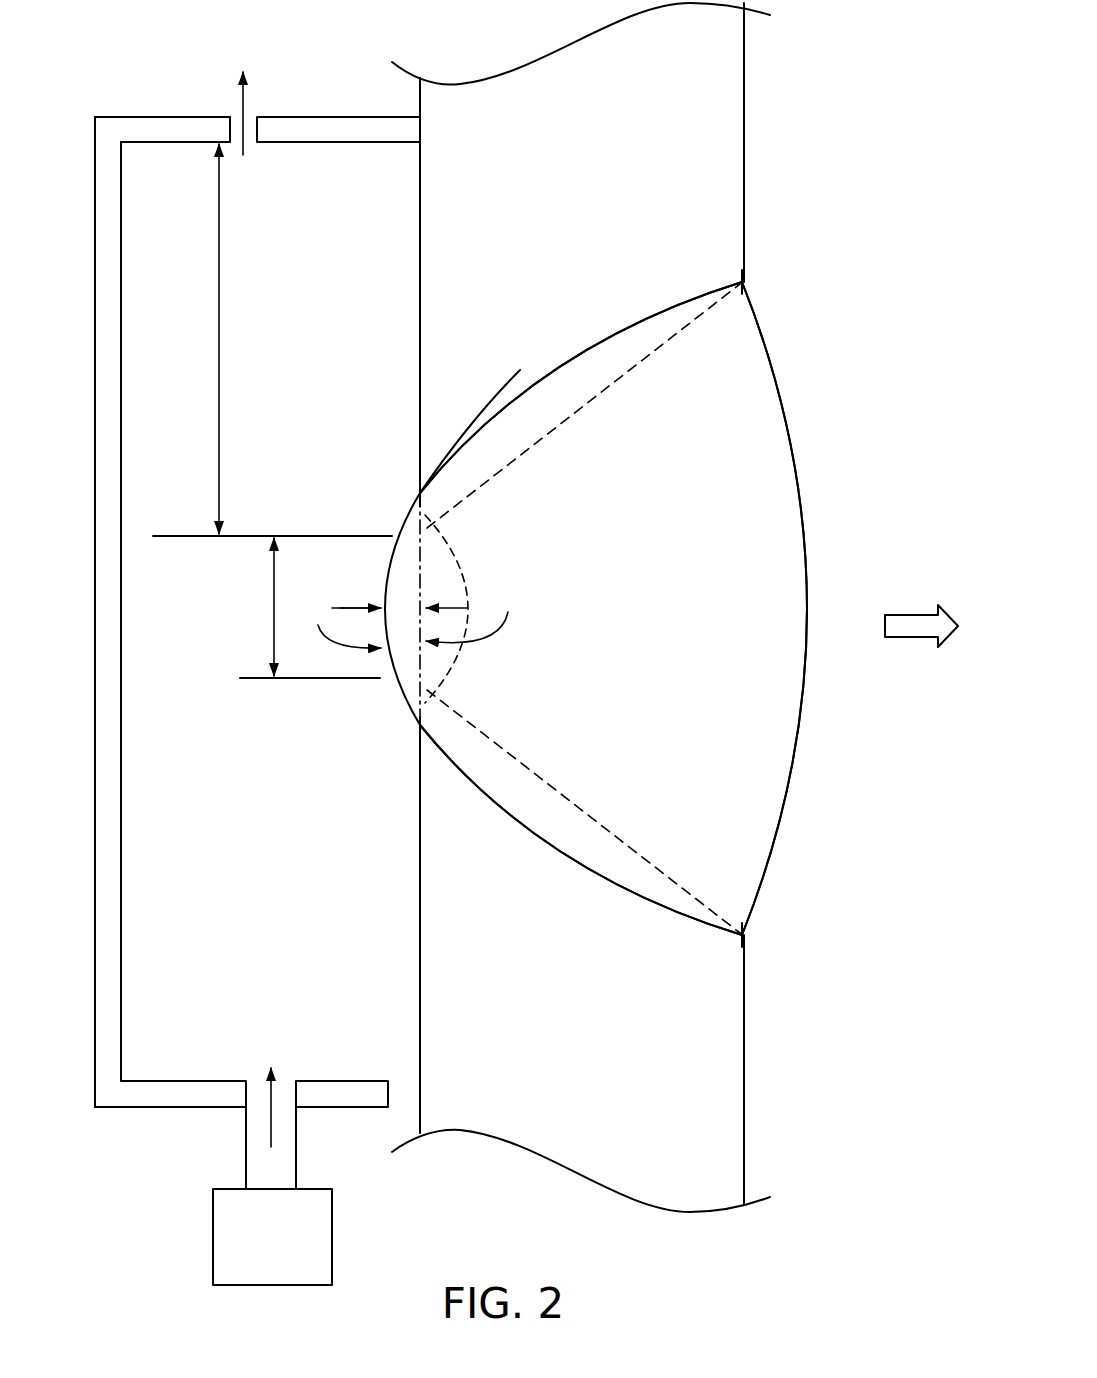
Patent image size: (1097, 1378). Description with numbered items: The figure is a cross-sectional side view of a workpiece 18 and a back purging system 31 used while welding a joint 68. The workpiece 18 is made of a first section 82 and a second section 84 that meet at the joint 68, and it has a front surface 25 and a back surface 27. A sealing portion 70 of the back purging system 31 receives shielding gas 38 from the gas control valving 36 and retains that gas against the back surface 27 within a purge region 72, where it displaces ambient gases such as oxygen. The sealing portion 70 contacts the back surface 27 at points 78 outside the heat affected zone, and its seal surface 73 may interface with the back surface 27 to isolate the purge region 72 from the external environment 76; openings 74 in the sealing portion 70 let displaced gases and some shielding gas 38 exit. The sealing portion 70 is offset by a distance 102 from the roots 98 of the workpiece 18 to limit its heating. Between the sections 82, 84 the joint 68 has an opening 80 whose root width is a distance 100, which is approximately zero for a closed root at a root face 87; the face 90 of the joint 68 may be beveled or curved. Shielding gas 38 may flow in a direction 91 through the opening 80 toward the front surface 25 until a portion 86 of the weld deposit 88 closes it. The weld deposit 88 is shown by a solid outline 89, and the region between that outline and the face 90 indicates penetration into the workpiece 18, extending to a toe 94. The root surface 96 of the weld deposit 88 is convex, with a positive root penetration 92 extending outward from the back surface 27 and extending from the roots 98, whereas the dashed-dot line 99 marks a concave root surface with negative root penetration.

The workpiece 18 is at (735, 43).
The front surface 25 is at (748, 112).
The back surface 27 is at (418, 193).
The back purging system 31 is at (207, 1144).
The gas control valving 36 is at (212, 1235).
The shielding gas 38 is at (267, 1113).
The joint 68 is at (858, 665).
The sealing portion 70 is at (195, 117).
The purge region 72 is at (140, 168).
The seal surface 73 is at (388, 1095).
The openings 74 is at (258, 128).
The external environment 76 is at (43, 617).
The points 78 is at (436, 127).
The opening 80 is at (474, 612).
The first section 82 is at (727, 170).
The second section 84 is at (725, 1073).
The portion of the weld deposit 86 is at (453, 582).
The root face 87 is at (438, 487).
The weld deposit 88 is at (775, 363).
The solid outline 89 is at (558, 367).
The face 90 is at (590, 408).
The direction 91 is at (912, 612).
The root penetration 92 is at (356, 606).
The toe 94 is at (739, 281).
The root surface 96 is at (336, 623).
The roots 98 is at (418, 490).
The dashed-dot line 99 is at (453, 552).
The distance 100 is at (273, 617).
The distance 102 is at (218, 222).